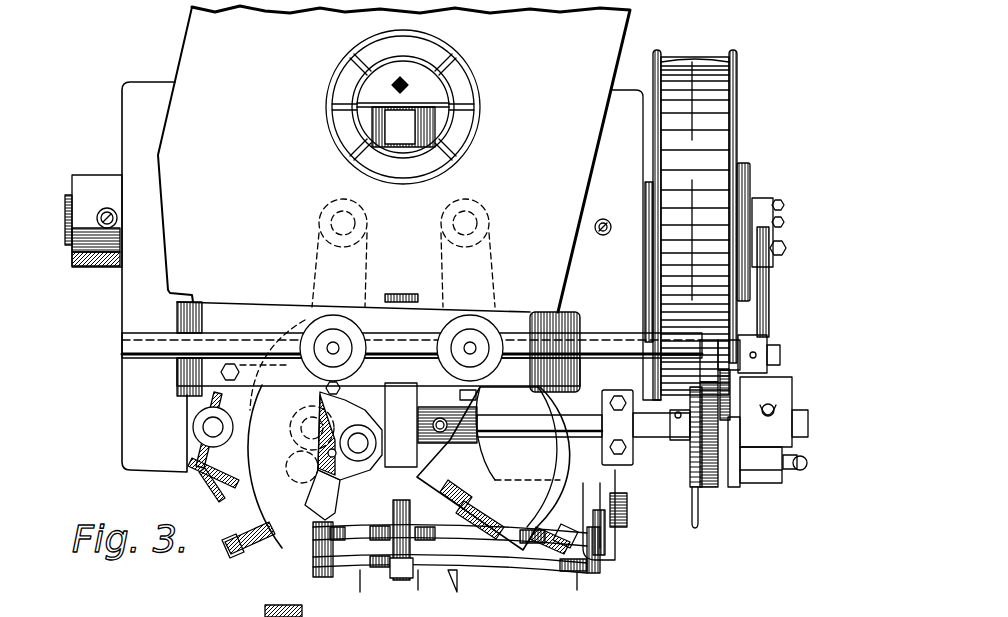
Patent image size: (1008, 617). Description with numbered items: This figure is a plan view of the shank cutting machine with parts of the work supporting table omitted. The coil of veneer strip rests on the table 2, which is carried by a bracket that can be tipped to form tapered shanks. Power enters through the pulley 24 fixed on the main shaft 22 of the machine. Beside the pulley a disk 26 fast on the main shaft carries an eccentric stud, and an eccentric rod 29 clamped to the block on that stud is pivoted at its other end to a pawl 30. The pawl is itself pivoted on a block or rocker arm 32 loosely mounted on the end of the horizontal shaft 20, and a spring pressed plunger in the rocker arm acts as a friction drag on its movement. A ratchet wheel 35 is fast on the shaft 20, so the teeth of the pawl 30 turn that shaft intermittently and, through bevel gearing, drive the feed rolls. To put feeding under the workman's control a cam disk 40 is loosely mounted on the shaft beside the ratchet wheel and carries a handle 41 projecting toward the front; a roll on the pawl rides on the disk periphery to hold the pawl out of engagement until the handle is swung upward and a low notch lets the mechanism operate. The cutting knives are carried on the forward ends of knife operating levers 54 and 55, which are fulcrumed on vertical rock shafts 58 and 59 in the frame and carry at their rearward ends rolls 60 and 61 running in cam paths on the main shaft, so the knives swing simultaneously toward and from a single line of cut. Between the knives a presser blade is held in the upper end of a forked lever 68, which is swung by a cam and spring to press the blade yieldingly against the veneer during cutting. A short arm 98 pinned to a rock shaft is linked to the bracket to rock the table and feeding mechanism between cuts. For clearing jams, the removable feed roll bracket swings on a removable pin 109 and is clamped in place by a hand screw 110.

The table 2 is at (195, 47).
The horizontal shaft 20 is at (622, 465).
The main shaft 22 is at (71, 195).
The pulley 24 is at (677, 58).
The disk 26 is at (745, 183).
The eccentric rod 29 is at (770, 297).
The pawl 30 is at (708, 371).
The rocker arm 32 is at (758, 487).
The ratchet wheel 35 is at (712, 493).
The cam disk 40 is at (693, 457).
The handle 41 is at (695, 517).
The knife operating lever 54 is at (268, 502).
The knife operating lever 55 is at (498, 525).
The rock shaft 58 is at (333, 347).
The rock shaft 59 is at (470, 347).
The roll 60 is at (337, 203).
The roll 61 is at (480, 208).
The lever 68 is at (381, 580).
The short arm 98 is at (252, 616).
The removable pin 109 is at (212, 426).
The hand screw 110 is at (193, 485).